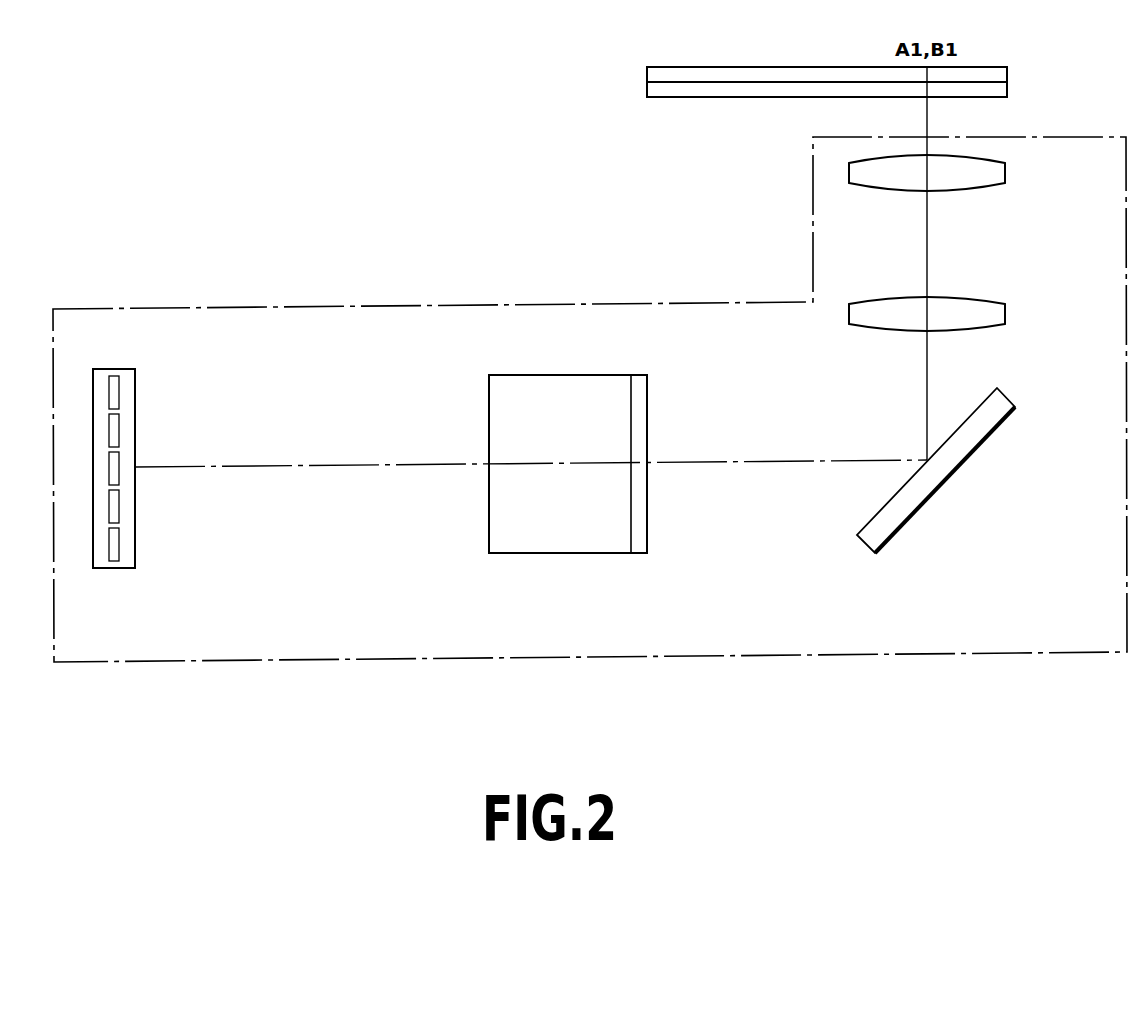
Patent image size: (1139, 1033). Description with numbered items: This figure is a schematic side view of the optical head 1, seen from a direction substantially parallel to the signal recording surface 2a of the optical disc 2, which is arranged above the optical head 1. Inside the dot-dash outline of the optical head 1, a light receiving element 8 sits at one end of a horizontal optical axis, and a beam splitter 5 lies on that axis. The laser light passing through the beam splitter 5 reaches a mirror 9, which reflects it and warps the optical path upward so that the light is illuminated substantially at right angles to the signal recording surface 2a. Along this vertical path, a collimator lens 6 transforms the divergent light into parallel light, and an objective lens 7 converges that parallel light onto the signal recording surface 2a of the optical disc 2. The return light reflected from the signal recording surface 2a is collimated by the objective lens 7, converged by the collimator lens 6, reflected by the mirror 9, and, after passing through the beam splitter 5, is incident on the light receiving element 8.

The optical head 1 is at (302, 306).
The optical disc 2 is at (690, 67).
The signal recording surface 2a is at (680, 97).
The beam splitter 5 is at (560, 555).
The collimator lens 6 is at (1005, 314).
The objective lens 7 is at (1005, 173).
The light receiving element 8 is at (115, 568).
The mirror 9 is at (960, 465).